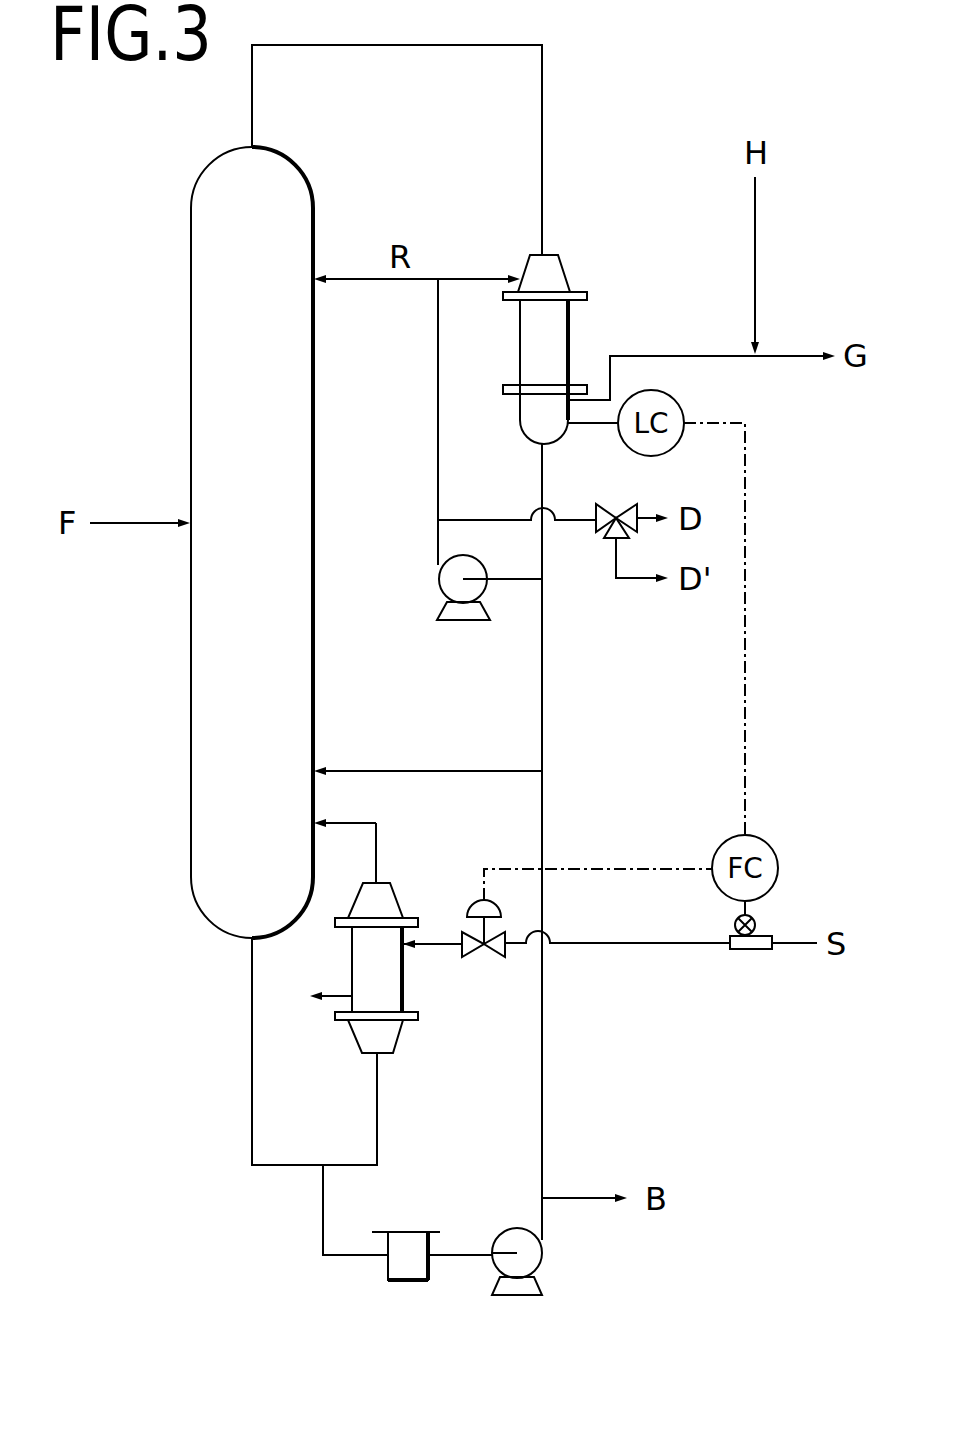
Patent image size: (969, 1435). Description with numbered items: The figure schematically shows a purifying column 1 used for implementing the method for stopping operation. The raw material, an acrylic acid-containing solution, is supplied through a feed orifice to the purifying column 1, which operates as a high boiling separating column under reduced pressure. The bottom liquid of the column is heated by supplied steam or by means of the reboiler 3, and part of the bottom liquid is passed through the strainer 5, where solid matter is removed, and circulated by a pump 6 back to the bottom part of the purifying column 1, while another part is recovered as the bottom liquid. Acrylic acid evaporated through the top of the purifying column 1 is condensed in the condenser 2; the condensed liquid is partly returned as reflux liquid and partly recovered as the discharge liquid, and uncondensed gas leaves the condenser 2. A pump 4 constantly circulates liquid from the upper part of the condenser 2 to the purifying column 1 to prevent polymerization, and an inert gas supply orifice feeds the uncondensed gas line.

The purifying column 1 is at (191, 386).
The condenser 2 is at (570, 345).
The reboiler 3 is at (403, 968).
The pump 4 is at (483, 596).
The strainer 5 is at (428, 1265).
The pump 6 is at (542, 1268).